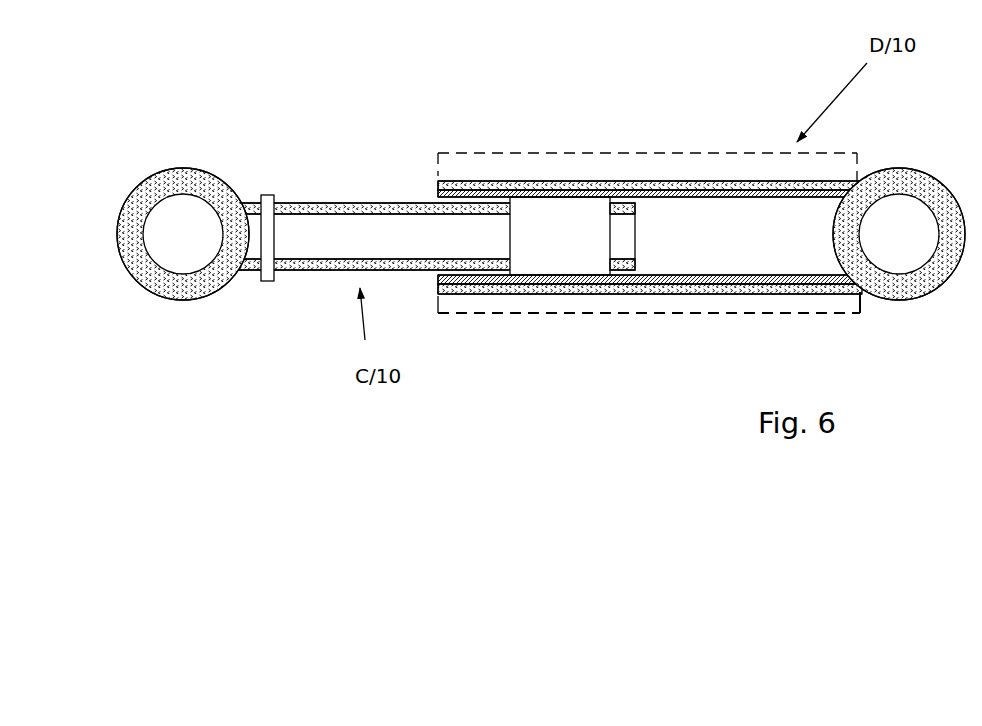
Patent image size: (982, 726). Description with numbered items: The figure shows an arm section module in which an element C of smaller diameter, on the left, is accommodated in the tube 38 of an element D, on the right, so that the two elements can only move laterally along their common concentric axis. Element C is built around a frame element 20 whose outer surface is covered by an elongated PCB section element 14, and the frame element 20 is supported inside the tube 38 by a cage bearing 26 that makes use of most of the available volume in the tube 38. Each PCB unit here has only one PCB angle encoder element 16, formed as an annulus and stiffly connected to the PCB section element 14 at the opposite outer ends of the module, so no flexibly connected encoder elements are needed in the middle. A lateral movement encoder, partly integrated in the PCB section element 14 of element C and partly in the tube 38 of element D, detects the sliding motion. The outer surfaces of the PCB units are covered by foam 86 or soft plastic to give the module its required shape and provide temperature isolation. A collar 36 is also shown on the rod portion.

The PCB section element 14 is at (365, 207).
The PCB angle encoder element 16 is at (197, 185).
The frame element 20 is at (301, 222).
The cage bearing 26 is at (542, 210).
The clamp 36 is at (268, 210).
The tube 38 is at (713, 277).
The foam 86 is at (635, 163).